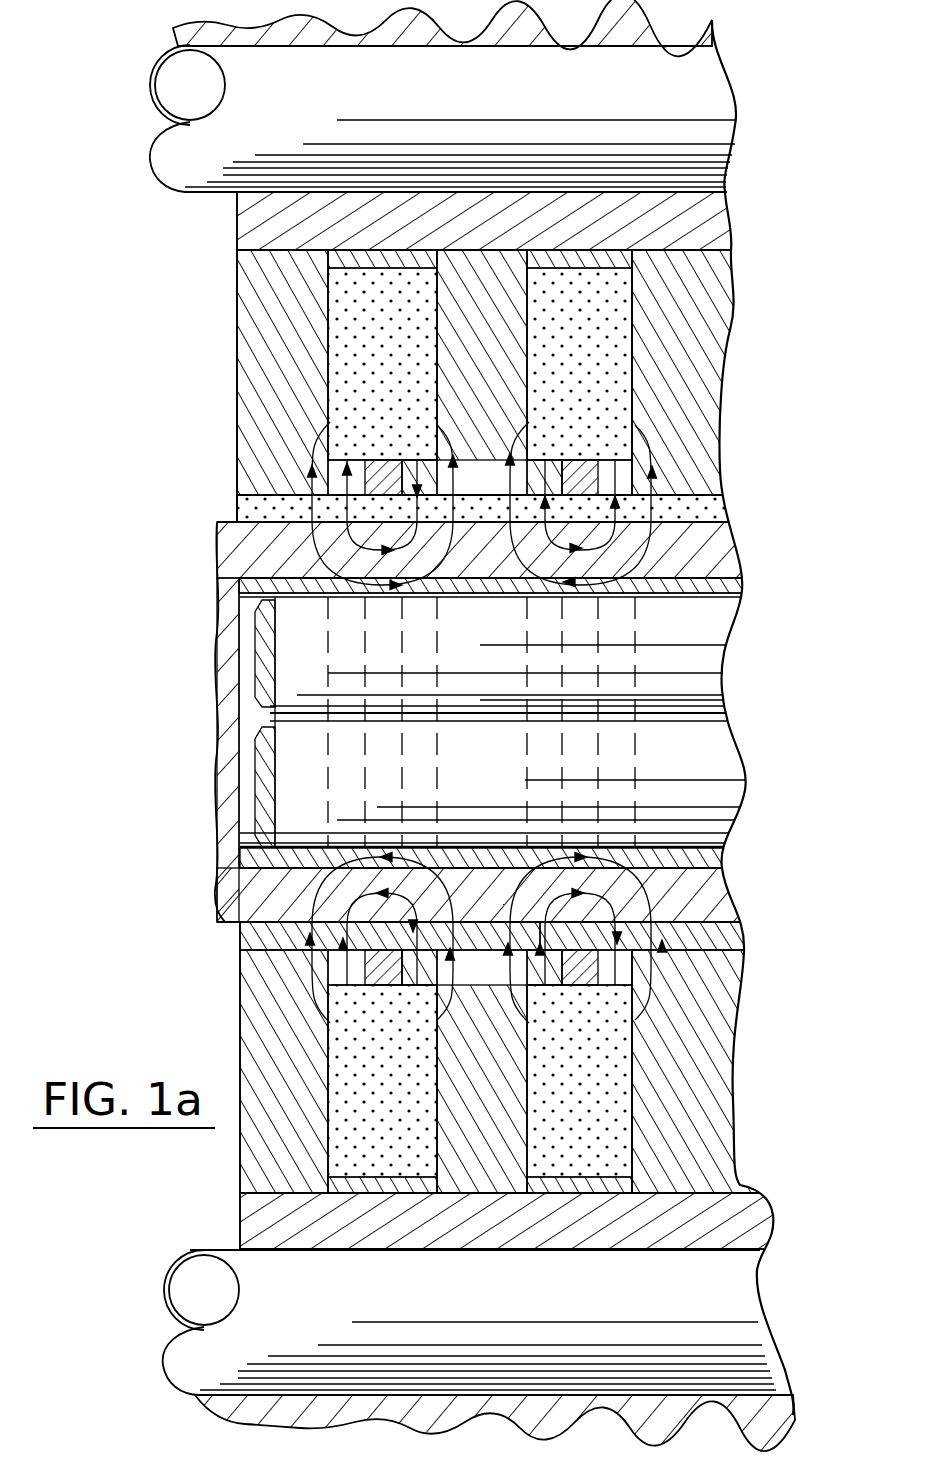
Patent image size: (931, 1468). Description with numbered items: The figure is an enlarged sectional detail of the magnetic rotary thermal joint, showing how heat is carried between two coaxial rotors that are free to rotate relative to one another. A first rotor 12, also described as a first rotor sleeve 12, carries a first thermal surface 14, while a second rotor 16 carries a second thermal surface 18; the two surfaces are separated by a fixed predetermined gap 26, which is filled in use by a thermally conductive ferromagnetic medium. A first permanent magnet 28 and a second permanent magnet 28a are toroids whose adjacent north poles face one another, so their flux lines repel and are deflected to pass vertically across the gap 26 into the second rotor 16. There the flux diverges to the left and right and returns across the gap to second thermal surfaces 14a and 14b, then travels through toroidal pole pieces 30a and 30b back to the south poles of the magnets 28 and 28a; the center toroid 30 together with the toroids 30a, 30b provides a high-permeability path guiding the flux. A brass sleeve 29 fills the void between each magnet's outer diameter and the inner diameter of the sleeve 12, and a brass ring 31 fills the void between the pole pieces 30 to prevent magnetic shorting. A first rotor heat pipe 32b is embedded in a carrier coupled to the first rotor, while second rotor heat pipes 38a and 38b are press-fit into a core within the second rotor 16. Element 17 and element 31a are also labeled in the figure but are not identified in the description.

The first rotor 12 is at (675, 225).
The first thermal surface 14 is at (726, 500).
The second thermal surface (left) 14a is at (247, 936).
The second thermal surface (right) 14b is at (740, 938).
The second rotor 16 is at (710, 550).
The armature back plate 17 is at (720, 848).
The second thermal surface 18 is at (733, 513).
The gap 26 is at (518, 508).
The first permanent magnet 28 is at (382, 721).
The permanent magnet 28a is at (579, 721).
The brass sleeve 29 is at (615, 260).
The toroidal pole piece 30 is at (482, 721).
The toroidal pole piece 30a is at (282, 721).
The toroidal pole piece 30b is at (717, 721).
The brass ring 31 is at (383, 968).
The flux path 31a is at (579, 968).
The first rotor heat pipe 32b is at (472, 725).
The second rotor heat pipe 38a is at (535, 722).
The second rotor heat pipe 38b is at (568, 785).